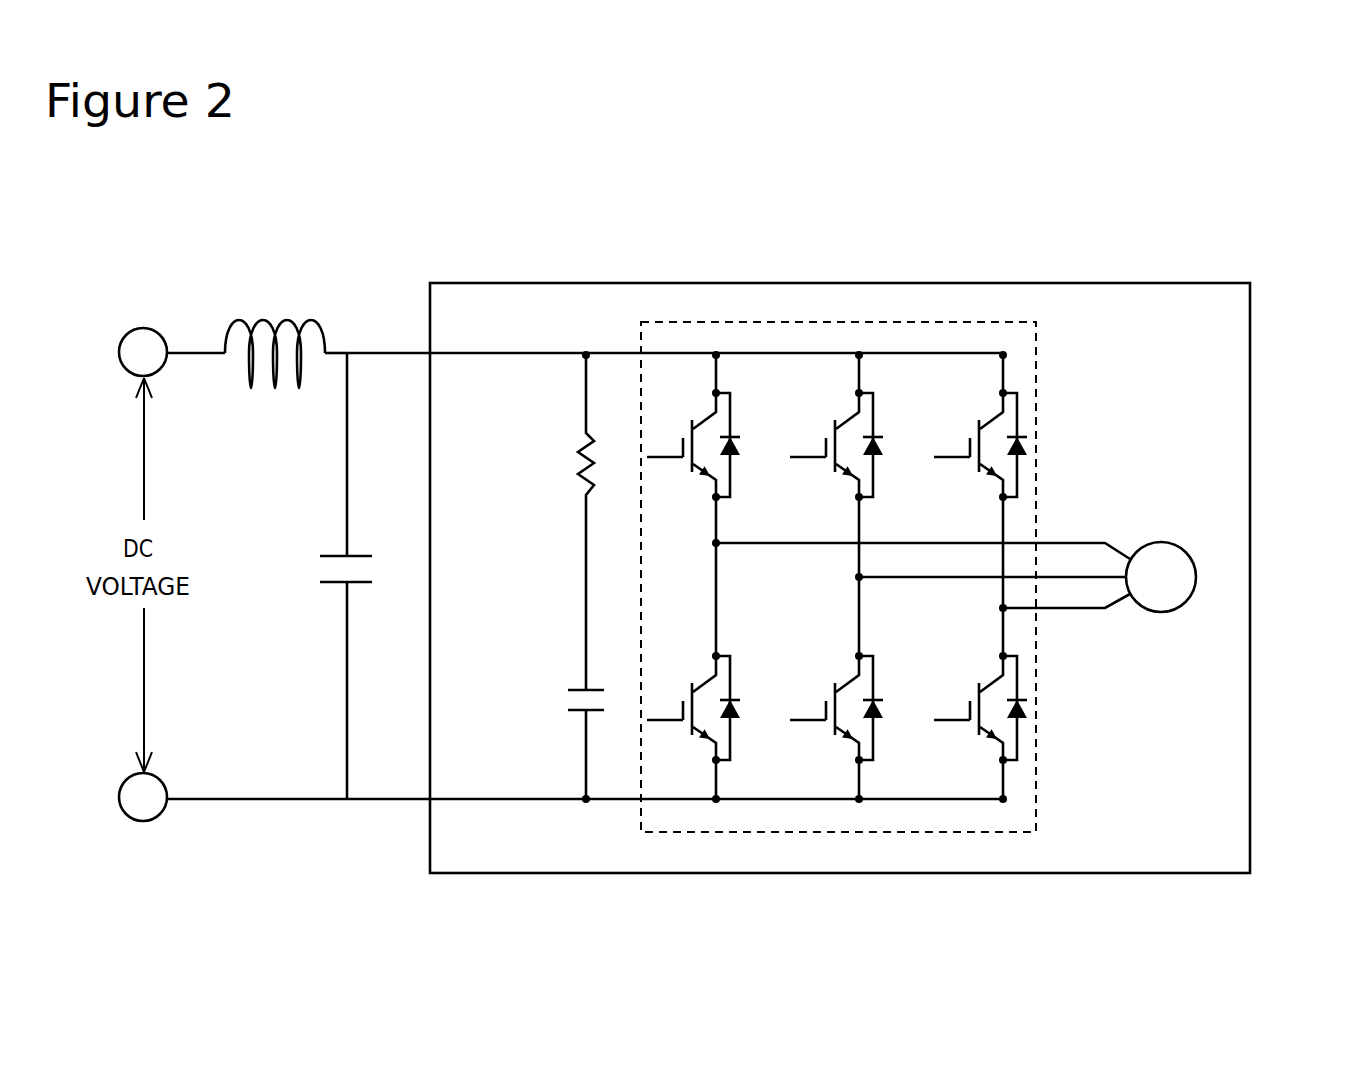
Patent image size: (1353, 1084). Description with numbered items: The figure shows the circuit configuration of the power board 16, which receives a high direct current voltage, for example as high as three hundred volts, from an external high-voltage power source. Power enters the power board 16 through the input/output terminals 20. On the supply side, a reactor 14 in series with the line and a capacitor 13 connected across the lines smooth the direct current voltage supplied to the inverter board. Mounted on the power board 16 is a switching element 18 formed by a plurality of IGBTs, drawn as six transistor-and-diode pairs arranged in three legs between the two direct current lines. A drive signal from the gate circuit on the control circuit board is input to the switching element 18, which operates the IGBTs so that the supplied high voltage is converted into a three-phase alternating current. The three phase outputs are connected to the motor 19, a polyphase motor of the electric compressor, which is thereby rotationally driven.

The capacitor 13 is at (335, 586).
The reactor 14 is at (271, 390).
The power board 16 is at (1146, 283).
The switching element 18 is at (827, 322).
The motor 19 is at (1196, 577).
The input/output terminals 20 is at (453, 350).